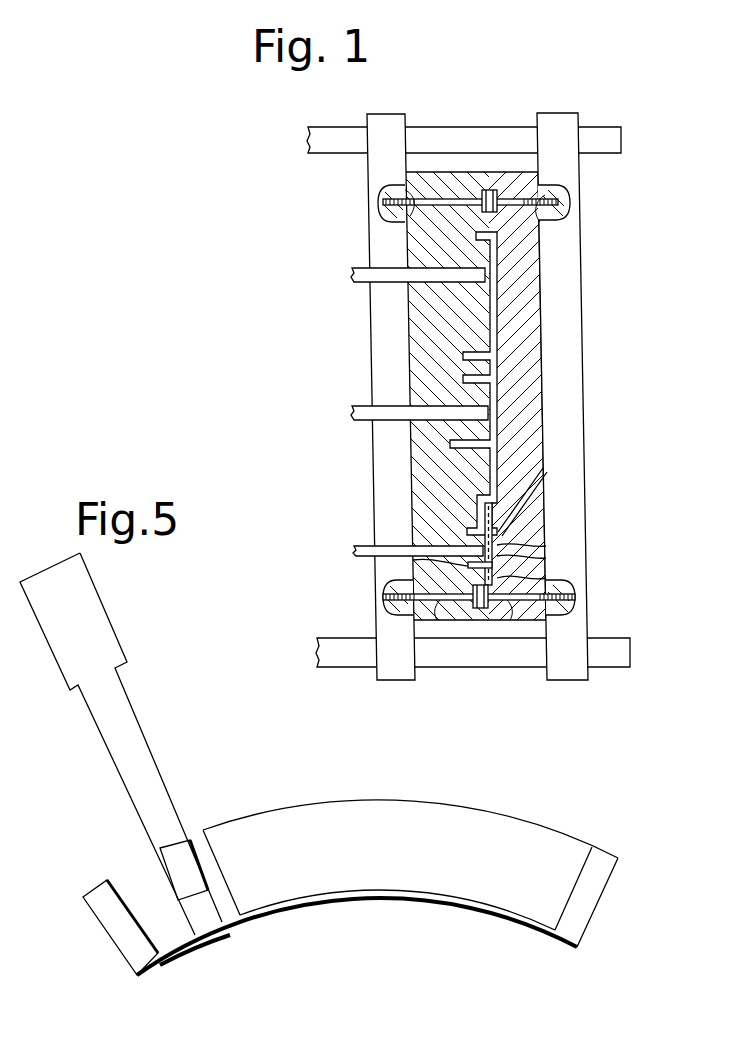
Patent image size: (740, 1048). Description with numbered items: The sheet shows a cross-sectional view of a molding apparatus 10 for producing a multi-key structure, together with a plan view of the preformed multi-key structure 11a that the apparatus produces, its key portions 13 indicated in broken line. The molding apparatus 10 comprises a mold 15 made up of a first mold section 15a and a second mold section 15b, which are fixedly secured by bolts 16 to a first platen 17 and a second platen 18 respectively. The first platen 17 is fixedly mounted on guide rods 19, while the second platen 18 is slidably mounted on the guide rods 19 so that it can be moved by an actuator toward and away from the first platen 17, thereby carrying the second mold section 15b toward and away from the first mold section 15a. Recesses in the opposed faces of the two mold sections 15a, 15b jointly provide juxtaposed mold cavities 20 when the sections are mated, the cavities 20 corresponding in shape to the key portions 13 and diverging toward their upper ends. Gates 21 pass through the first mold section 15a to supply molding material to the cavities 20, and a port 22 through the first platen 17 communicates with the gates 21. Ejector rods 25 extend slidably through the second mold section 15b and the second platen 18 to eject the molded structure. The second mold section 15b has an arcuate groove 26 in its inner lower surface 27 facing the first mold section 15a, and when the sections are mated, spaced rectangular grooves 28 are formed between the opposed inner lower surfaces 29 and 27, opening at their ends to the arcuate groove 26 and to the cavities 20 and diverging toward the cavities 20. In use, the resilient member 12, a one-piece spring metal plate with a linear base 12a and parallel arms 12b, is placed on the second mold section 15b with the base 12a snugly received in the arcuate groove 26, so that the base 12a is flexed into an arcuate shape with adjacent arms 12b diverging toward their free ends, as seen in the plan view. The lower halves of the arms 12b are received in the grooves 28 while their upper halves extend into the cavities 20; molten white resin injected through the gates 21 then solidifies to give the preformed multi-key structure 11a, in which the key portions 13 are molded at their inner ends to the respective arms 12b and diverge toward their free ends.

In FIG. 1, the molding apparatus 10 is at (450, 370).
In FIG. 5, the preformed multi-key structure 11a is at (250, 810).
In FIG. 1, the resilient member 12 is at (495, 550).
In FIG. 5, the resilient member 12 is at (242, 928).
In FIG. 5, the base 12a is at (187, 950).
In FIG. 5, the arms 12b is at (100, 895).
In FIG. 5, the key portions 13 is at (113, 628).
In FIG. 1, the mold 15 is at (487, 188).
In FIG. 1, the first mold section 15a is at (540, 318).
In FIG. 1, the second mold section 15b is at (410, 487).
In FIG. 1, the bolts 16 is at (410, 216).
In FIG. 1, the first platen 17 is at (568, 276).
In FIG. 1, the second platen 18 is at (378, 362).
In FIG. 1, the guide rods 19 is at (333, 128).
In FIG. 1, the mold cavities 20 is at (497, 380).
In FIG. 1, the gates 21 is at (530, 536).
In FIG. 1, the port 22 is at (543, 468).
In FIG. 1, the ejector rods 25 is at (351, 275).
In FIG. 1, the groove 26 is at (468, 565).
In FIG. 1, the inner lower surface 27 is at (560, 582).
In FIG. 1, the grooves 28 is at (530, 576).
In FIG. 1, the inner lower surface 29 is at (395, 585).